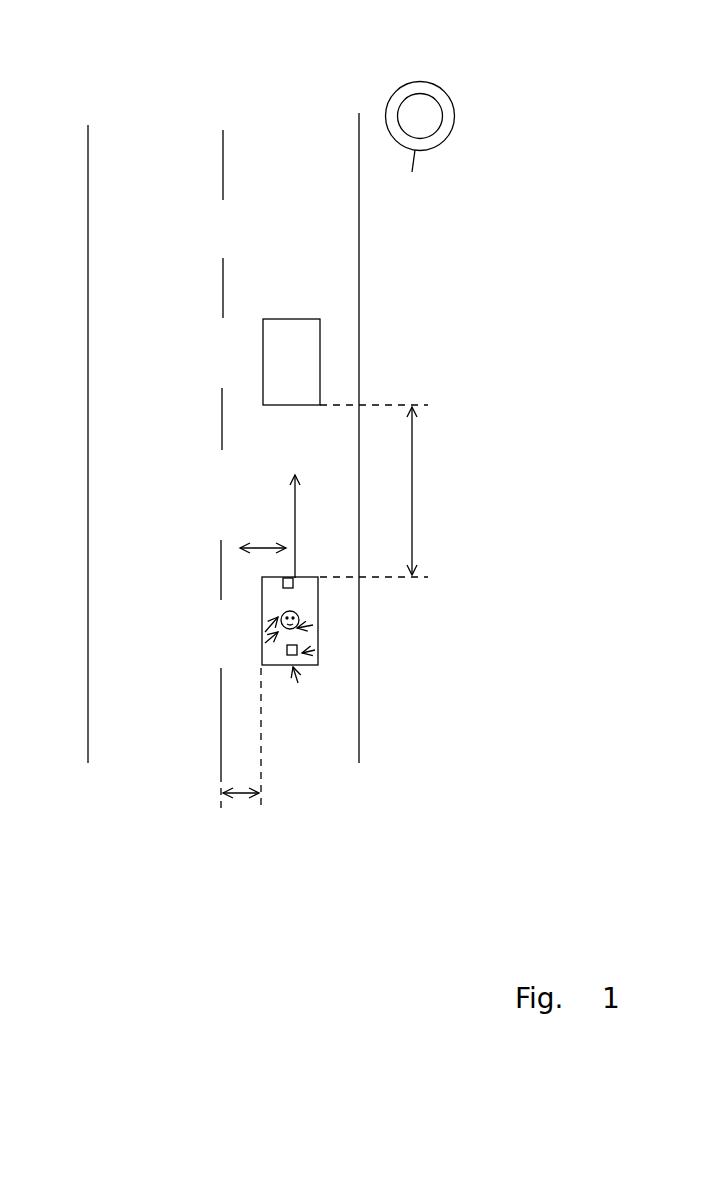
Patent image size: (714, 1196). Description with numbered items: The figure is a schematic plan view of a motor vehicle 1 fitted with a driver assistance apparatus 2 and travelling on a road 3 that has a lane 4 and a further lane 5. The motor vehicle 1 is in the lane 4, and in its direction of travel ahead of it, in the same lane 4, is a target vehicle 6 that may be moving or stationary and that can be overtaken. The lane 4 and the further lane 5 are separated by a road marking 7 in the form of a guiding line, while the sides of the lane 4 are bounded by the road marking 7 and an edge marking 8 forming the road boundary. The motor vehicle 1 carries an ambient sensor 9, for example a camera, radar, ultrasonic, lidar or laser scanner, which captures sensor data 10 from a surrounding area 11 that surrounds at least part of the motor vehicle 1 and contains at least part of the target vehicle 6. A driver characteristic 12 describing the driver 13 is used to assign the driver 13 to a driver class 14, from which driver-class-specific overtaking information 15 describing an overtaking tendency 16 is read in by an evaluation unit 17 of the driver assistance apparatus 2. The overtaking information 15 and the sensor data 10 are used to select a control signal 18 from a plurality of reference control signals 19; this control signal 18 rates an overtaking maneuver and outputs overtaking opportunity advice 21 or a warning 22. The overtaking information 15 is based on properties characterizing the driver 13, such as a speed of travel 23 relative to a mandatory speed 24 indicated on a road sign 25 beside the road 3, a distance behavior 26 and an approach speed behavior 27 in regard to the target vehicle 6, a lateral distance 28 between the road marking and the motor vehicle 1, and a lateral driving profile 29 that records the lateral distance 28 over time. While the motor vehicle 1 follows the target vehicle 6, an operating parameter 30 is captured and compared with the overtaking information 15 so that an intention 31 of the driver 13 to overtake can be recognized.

The motor vehicle 1 is at (320, 638).
The driver assistance apparatus 2 is at (320, 667).
The road 3 is at (369, 207).
The lane 4 is at (297, 167).
The further lane 5 is at (150, 150).
The target vehicle 6 is at (305, 358).
The road marking 7 is at (222, 275).
The edge marking 8 is at (360, 265).
The ambient sensor 9 is at (320, 605).
The sensor data 10 is at (278, 583).
The surrounding area 11 is at (272, 492).
The driver characteristic 12 is at (262, 620).
The driver 13 is at (320, 622).
The driver class 14 is at (264, 630).
The overtaking information 15 is at (306, 668).
The overtaking tendency 16 is at (320, 643).
The evaluation unit 17 is at (320, 657).
The control signal 18 is at (275, 670).
The reference control signals 19 is at (288, 675).
The overtaking opportunity advice 21 is at (262, 655).
The warning 22 is at (262, 665).
The speed of travel 23 is at (292, 518).
The mandatory speed 24 is at (455, 115).
The road sign 25 is at (448, 93).
The distance behavior 26 is at (412, 492).
The approach speed behavior 27 is at (288, 530).
The lateral distance 28 is at (242, 795).
The lateral driving profile 29 is at (263, 552).
The operating parameter 30 is at (323, 591).
The intention 31 is at (294, 672).